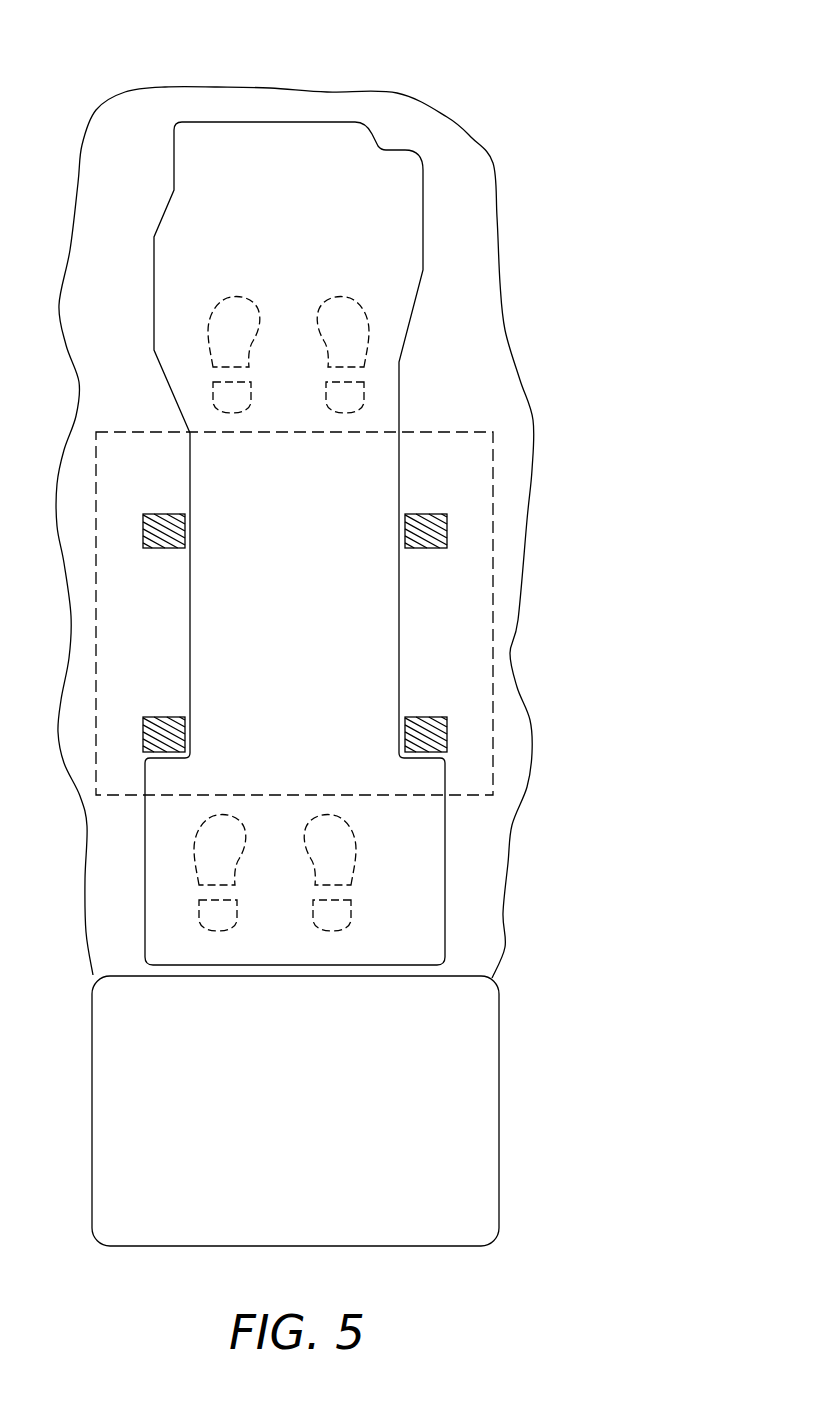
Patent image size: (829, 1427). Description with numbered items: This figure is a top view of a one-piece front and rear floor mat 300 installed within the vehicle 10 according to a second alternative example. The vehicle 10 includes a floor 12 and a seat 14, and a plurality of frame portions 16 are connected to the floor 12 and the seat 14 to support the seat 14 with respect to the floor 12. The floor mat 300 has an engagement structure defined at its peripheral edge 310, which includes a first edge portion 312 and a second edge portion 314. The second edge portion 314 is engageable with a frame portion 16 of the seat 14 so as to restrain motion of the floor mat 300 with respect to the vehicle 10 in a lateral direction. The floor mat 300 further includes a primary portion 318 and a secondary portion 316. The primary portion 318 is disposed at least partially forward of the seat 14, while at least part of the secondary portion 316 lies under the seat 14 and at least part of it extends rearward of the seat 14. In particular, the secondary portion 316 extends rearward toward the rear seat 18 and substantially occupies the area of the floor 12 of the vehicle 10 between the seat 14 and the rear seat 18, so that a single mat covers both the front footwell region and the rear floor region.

The vehicle 10 is at (465, 94).
The floor 12 is at (483, 221).
The seat 14 is at (493, 656).
The frame portions 16 is at (166, 513).
The rear seat 18 is at (500, 1112).
The one-piece front and rear floor mat 300 is at (453, 177).
The peripheral edge 310 is at (400, 572).
The first edge portion 312 is at (188, 615).
The second edge portion 314 is at (170, 758).
The secondary portion 316 is at (483, 880).
The primary portion 318 is at (425, 386).